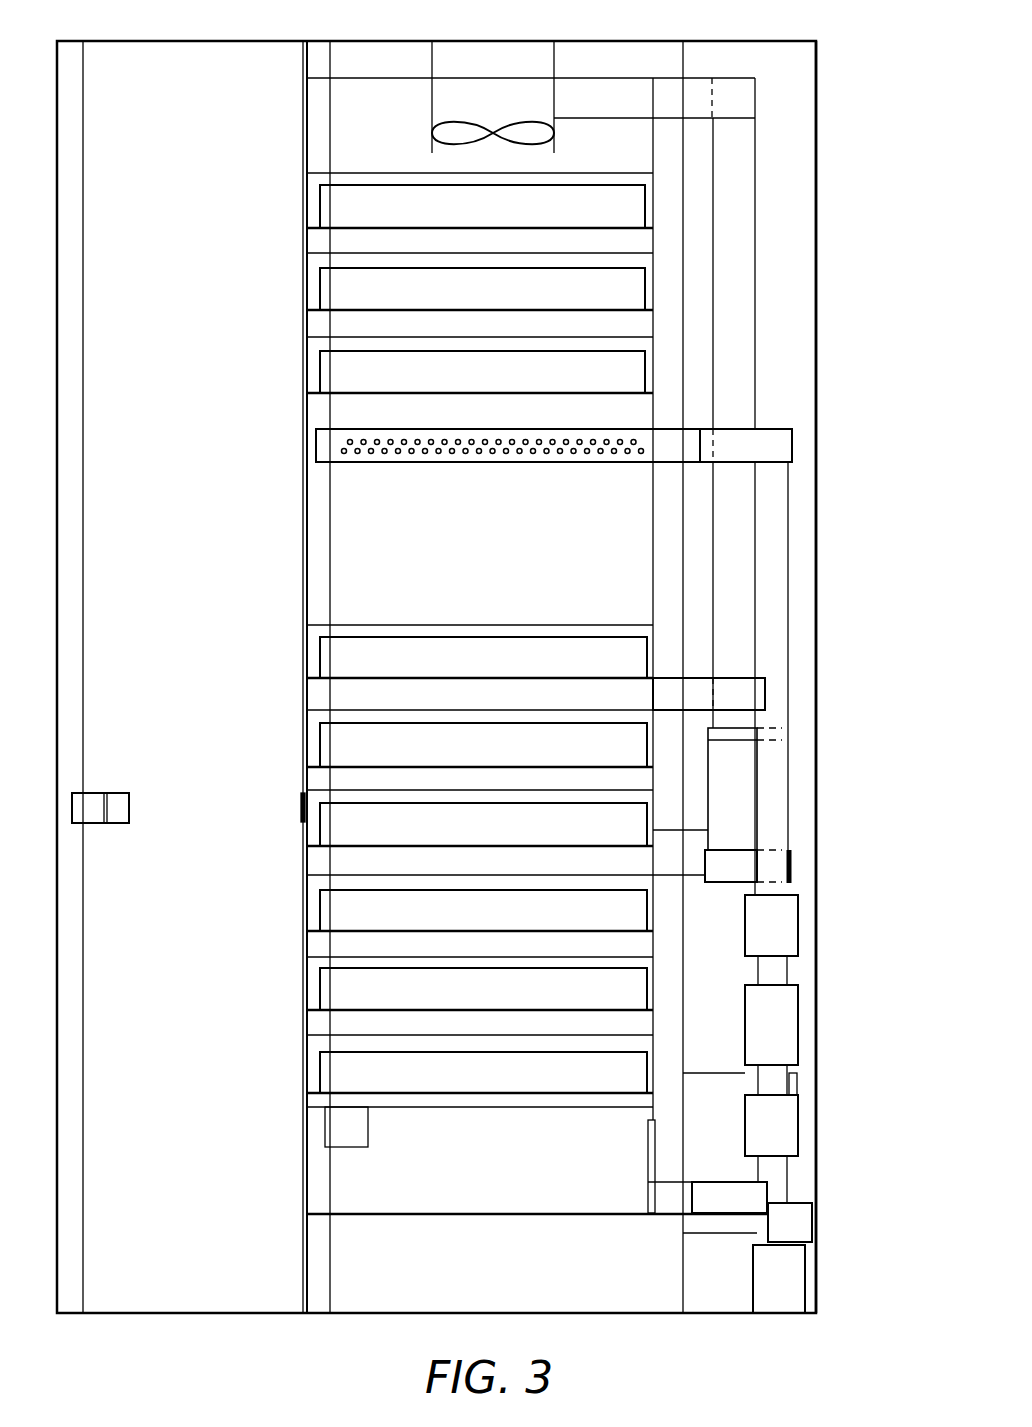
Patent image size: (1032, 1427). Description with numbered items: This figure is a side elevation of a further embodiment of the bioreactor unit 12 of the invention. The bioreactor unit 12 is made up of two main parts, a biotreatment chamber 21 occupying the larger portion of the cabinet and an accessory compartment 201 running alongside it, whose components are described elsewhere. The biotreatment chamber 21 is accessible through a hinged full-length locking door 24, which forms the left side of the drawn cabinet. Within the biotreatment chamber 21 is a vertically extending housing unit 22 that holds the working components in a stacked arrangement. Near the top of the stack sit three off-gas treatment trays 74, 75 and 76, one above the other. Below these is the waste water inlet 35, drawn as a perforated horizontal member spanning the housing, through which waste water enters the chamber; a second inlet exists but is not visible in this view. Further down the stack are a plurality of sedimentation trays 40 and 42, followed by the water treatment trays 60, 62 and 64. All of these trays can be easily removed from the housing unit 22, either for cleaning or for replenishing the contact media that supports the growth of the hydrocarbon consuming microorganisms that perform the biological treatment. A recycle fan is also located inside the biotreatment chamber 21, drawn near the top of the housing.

The bioreactor unit 12 is at (614, 43).
The biotreatment chamber 21 is at (684, 43).
The vertically extending housing unit 22 is at (670, 72).
The accessory compartment 201 is at (816, 87).
The hinged full-length locking door 24 is at (218, 1287).
The waste water inlet 35 is at (528, 462).
The sedimentation tray 40 is at (595, 669).
The sedimentation tray 42 is at (595, 756).
The water treatment tray 60 is at (595, 836).
The water treatment tray 62 is at (595, 922).
The water treatment tray 64 is at (595, 1084).
The off-gas treatment tray 74 is at (618, 219).
The off-gas treatment tray 75 is at (615, 301).
The off-gas treatment tray 76 is at (615, 386).